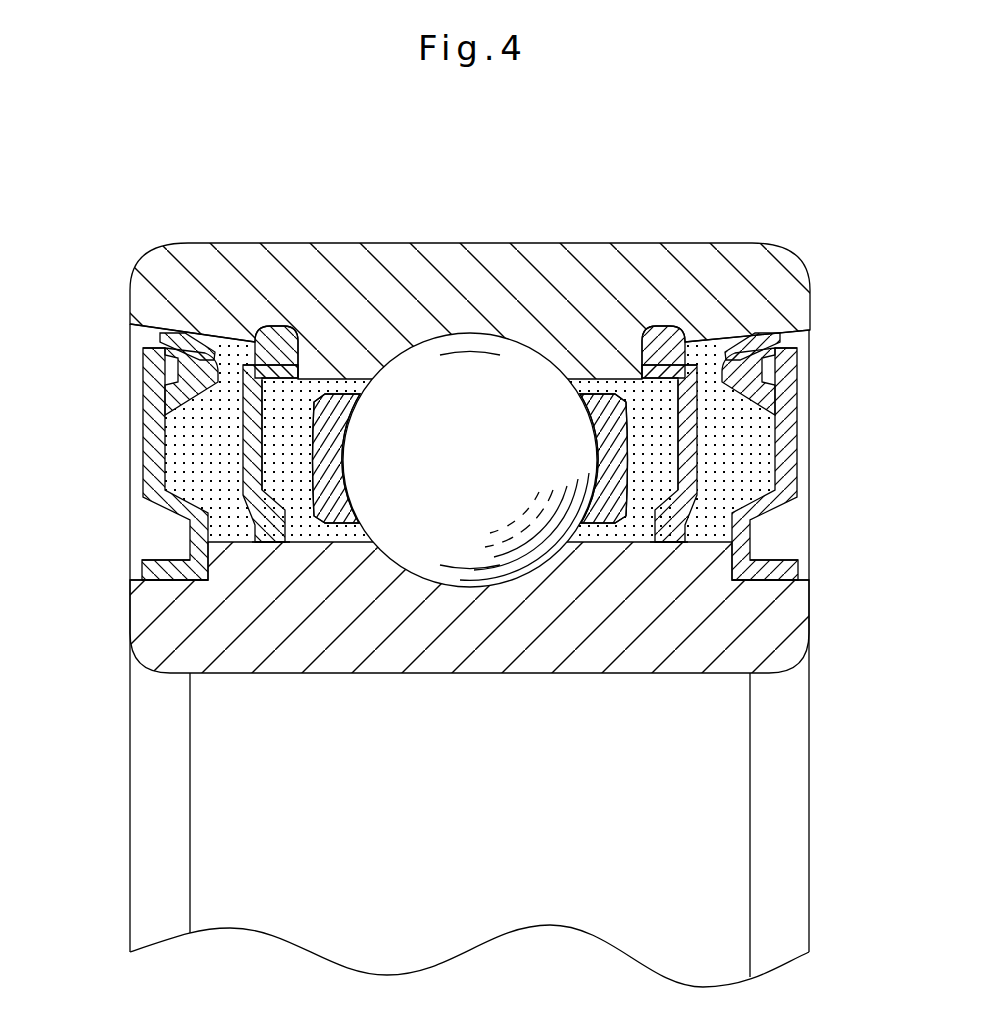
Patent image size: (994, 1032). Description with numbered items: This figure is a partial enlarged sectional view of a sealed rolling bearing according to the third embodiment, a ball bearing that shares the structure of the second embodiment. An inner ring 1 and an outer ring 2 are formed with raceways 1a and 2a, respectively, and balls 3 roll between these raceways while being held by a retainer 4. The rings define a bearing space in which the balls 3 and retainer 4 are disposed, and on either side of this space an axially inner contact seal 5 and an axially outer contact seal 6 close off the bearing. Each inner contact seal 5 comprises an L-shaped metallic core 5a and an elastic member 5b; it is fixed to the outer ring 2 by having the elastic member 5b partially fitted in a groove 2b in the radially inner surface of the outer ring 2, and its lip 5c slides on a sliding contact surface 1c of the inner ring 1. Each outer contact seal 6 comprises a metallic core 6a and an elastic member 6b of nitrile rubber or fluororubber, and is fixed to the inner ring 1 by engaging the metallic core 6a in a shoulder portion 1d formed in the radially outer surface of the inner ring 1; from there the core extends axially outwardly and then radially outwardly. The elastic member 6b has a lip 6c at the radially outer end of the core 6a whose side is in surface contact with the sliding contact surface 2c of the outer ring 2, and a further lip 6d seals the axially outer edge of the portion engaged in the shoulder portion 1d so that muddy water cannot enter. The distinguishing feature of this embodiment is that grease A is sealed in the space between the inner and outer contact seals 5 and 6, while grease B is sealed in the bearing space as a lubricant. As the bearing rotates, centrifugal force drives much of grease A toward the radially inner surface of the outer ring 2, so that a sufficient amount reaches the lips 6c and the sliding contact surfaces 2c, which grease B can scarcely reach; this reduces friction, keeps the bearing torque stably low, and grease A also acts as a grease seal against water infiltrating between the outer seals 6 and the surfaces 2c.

The inner ring 1 is at (210, 638).
The raceway 1a is at (425, 575).
The sliding contact surface 1c is at (274, 560).
The shoulder portion 1d is at (152, 590).
The outer ring 2 is at (315, 285).
The raceway 2a is at (462, 366).
The groove 2b is at (266, 330).
The sliding contact surface 2c is at (200, 340).
The balls 3 is at (420, 400).
The retainer 4 is at (462, 366).
The axially inner contact seal 5 is at (242, 435).
The metallic core 5a is at (710, 358).
The elastic member 5b is at (698, 360).
The lip 5c is at (682, 542).
The axially outer contact seal 6 is at (142, 453).
The metallic core 6a is at (798, 388).
The elastic member 6b is at (775, 366).
The lip 6c is at (780, 330).
The further lip 6d is at (790, 567).
The grease A is at (207, 467).
The grease B is at (635, 522).